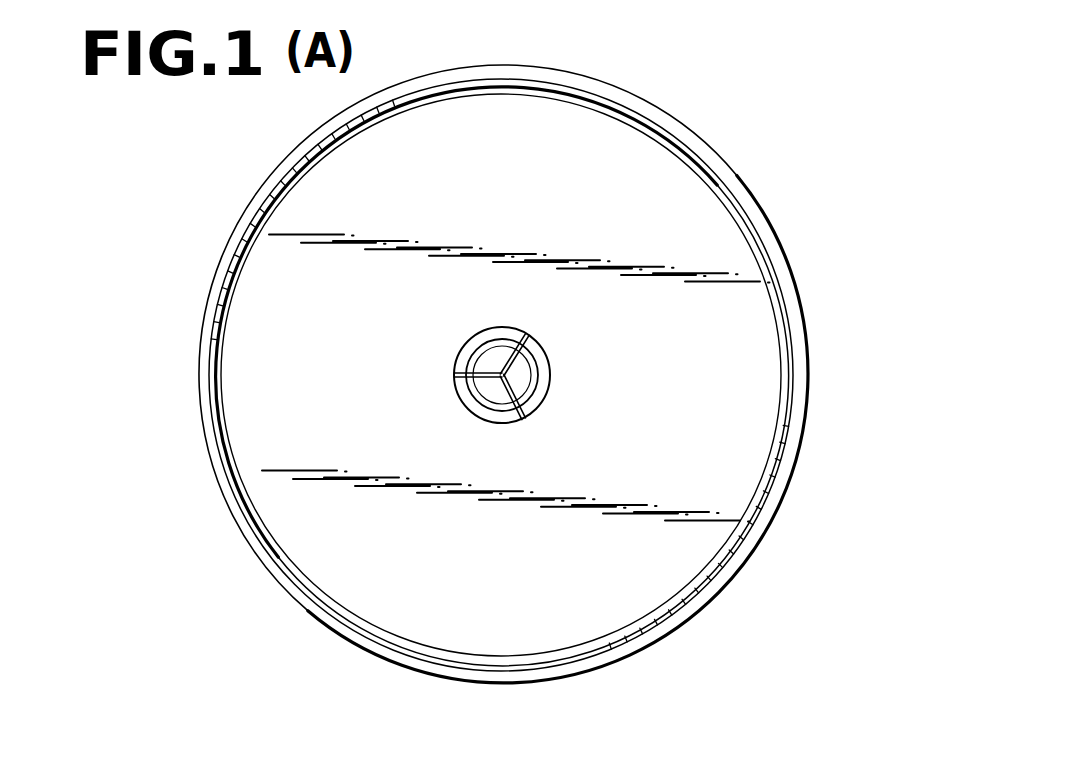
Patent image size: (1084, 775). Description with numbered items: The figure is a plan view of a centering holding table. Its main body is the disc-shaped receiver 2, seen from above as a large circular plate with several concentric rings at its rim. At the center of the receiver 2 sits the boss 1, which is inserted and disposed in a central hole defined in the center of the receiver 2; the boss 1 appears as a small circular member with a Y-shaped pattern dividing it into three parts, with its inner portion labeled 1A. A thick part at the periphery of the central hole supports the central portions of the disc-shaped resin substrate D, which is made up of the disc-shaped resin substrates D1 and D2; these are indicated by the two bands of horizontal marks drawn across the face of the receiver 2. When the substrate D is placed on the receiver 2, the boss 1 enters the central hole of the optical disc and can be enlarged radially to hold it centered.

The boss 1 is at (510, 352).
The center hole 1A is at (527, 372).
The disc-shaped receiver 2 is at (745, 195).
The disc-shaped resin substrate D is at (616, 409).
The disc-shaped resin substrate D1 is at (519, 259).
The disc-shaped resin substrate D2 is at (743, 512).